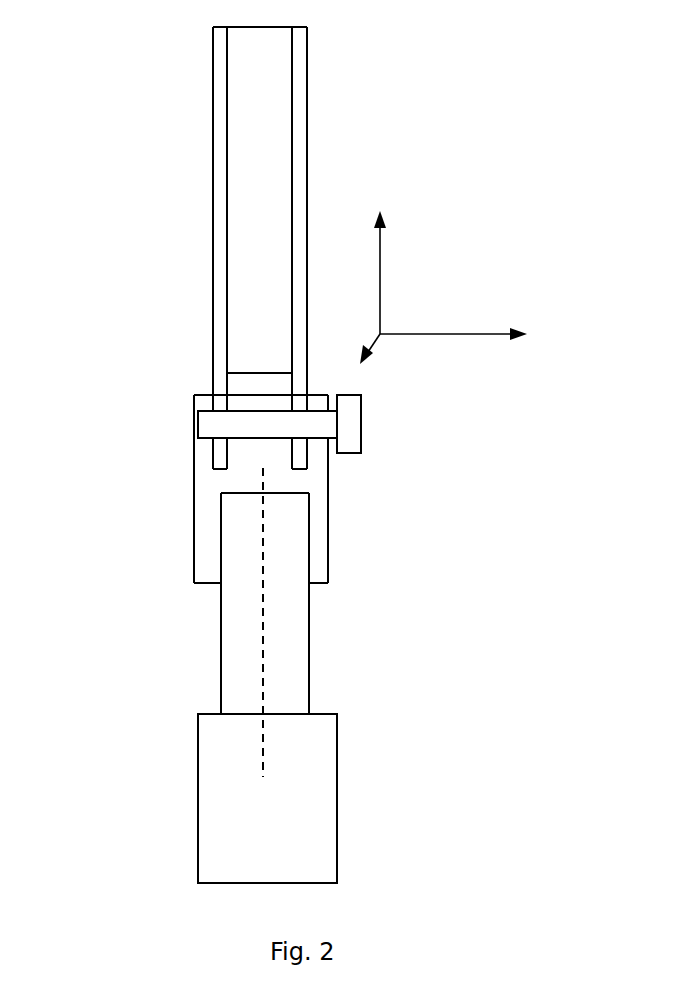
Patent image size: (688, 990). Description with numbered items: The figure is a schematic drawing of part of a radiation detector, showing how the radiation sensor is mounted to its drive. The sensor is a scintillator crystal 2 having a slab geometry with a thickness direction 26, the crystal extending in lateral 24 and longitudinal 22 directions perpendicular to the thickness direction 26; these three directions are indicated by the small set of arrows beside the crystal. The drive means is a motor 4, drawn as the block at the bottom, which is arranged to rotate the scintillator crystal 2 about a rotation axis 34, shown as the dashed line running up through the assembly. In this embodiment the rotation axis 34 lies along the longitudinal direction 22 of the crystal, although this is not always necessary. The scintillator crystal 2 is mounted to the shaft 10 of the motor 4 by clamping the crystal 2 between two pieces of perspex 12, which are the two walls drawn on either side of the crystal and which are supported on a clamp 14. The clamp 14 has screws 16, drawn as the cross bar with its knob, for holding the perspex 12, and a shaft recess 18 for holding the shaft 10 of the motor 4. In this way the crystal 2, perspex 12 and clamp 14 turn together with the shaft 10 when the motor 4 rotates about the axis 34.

The scintillator crystal 2 is at (245, 160).
The motor 4 is at (198, 762).
The shaft 10 is at (245, 598).
The pieces of perspex 12 is at (292, 300).
The clamp 14 is at (328, 520).
The screws 16 is at (198, 424).
The shaft recess 18 is at (221, 536).
The longitudinal direction 22 is at (407, 268).
The lateral direction 24 is at (380, 362).
The thickness direction 26 is at (481, 325).
The rotation axis 34 is at (263, 658).